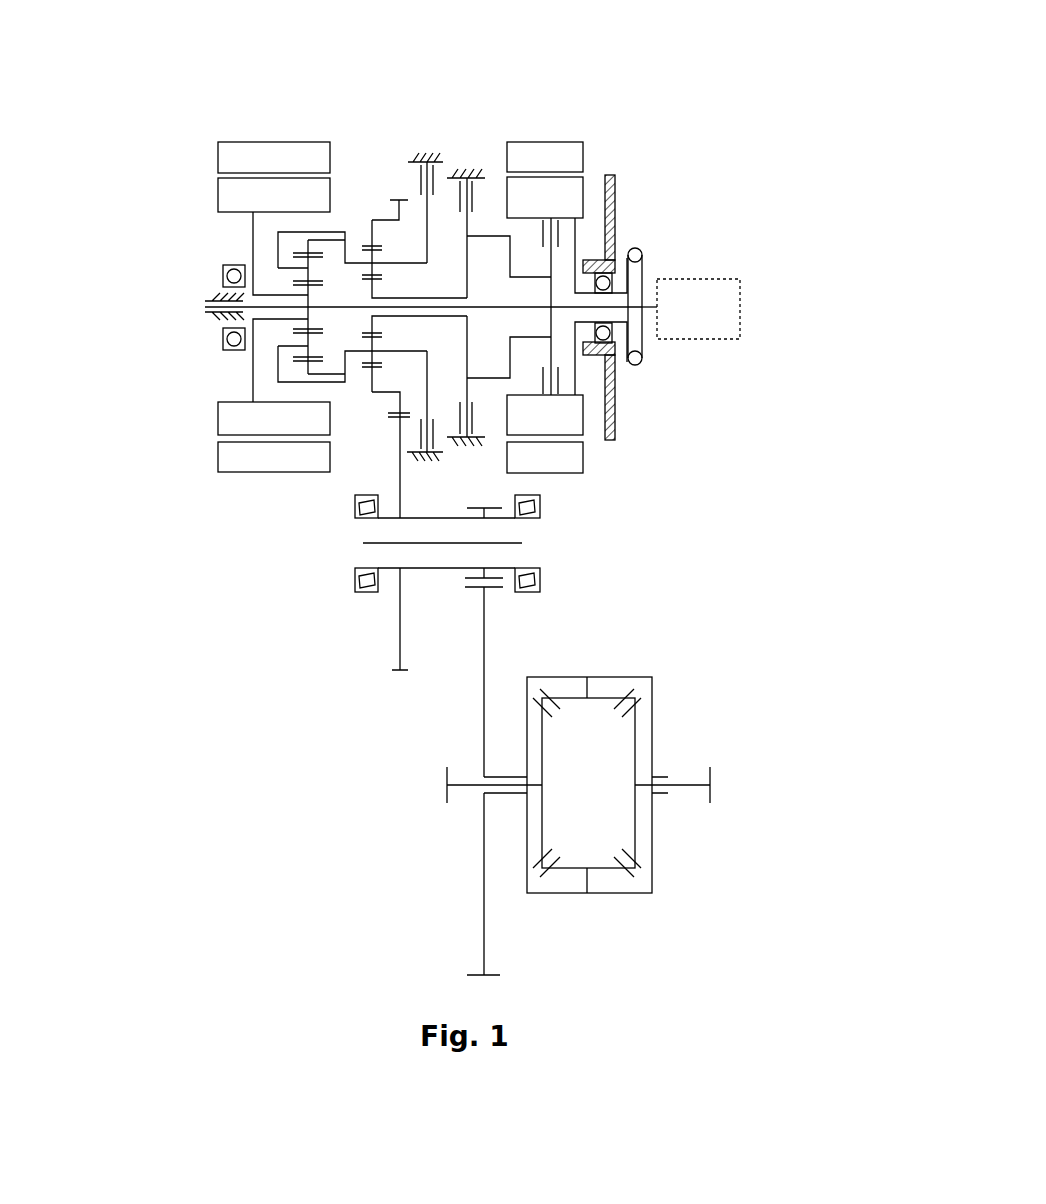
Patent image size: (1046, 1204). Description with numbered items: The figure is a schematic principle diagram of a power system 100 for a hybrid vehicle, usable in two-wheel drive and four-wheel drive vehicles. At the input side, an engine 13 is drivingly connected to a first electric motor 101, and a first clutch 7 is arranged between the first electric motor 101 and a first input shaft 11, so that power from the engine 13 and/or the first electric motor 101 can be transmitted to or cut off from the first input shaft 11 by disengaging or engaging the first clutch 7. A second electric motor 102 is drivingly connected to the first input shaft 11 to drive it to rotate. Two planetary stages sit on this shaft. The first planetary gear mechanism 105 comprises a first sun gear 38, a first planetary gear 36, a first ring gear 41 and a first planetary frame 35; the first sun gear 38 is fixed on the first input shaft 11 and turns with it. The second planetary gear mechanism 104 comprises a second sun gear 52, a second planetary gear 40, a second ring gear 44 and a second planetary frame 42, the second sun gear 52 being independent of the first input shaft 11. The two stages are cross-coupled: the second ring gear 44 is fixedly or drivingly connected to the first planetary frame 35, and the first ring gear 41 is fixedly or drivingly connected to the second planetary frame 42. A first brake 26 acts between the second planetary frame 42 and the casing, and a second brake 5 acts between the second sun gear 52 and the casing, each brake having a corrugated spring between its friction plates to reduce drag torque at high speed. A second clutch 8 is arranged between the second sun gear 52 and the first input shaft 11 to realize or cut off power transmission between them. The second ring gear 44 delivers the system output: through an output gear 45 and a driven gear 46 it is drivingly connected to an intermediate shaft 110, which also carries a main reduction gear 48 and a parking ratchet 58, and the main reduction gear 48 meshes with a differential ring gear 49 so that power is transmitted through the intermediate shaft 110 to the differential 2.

The power system 100 is at (787, 50).
The first electric motor 101 is at (565, 200).
The second electric motor 102 is at (305, 193).
The second planetary gear mechanism 104 is at (357, 286).
The first planetary gear mechanism 105 is at (285, 352).
The first ring gear 41 is at (282, 256).
The first planetary frame 35 is at (283, 268).
The first planetary gear 36 is at (280, 272).
The first sun gear 38 is at (280, 325).
The second ring gear 44 is at (370, 231).
The output gear 45 is at (398, 198).
The first brake 26 is at (421, 160).
The second brake 5 is at (466, 176).
The second clutch 8 is at (513, 248).
The first clutch 7 is at (553, 218).
The first input shaft 11 is at (533, 310).
The engine 13 is at (705, 290).
The intermediate shaft 110 is at (520, 543).
The second sun gear 52 is at (372, 325).
The second planetary gear 40 is at (405, 350).
The second planetary frame 42 is at (425, 352).
The main reduction gear 48 is at (492, 585).
The driven gear 46 is at (398, 672).
The parking ratchet 58 is at (398, 620).
The differential ring gear 49 is at (490, 945).
The differential 2 is at (568, 808).